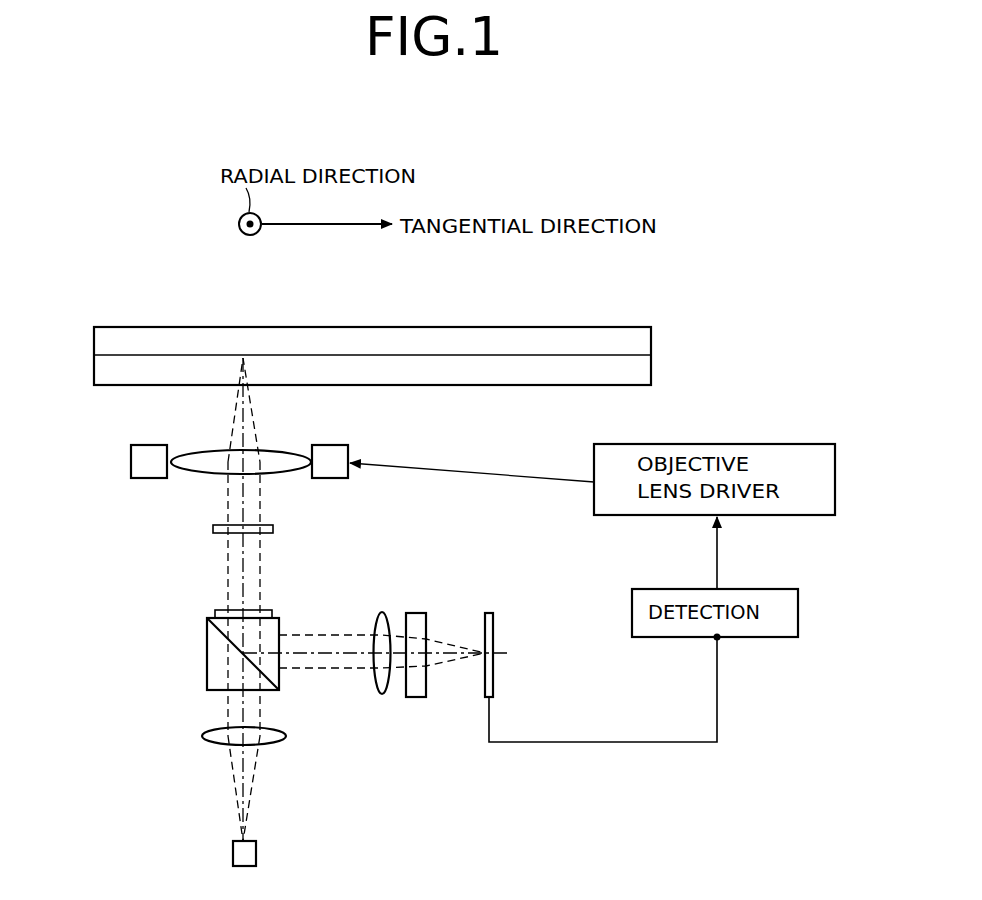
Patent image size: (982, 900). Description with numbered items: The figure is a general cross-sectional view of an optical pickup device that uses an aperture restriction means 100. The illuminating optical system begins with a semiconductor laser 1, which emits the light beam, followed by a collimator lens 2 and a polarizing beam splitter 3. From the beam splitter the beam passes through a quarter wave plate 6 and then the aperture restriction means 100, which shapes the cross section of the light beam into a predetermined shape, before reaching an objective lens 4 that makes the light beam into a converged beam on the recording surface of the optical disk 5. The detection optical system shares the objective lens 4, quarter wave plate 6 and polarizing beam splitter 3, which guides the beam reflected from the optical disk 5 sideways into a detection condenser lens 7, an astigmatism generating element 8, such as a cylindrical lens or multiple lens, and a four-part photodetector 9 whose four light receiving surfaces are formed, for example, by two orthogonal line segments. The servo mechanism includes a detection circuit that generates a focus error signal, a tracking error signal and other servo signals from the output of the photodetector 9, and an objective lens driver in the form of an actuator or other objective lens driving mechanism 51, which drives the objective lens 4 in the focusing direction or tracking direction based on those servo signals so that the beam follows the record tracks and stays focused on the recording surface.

The semiconductor laser 1 is at (256, 855).
The collimator lens 2 is at (286, 735).
The polarizing beam splitter 3 is at (207, 670).
The objective lens 4 is at (287, 449).
The optical disk 5 is at (601, 327).
The quarter wave plate 6 is at (215, 610).
The detection condenser lens 7 is at (382, 612).
The astigmatism generating element 8 is at (418, 613).
The four-part photodetector 9 is at (488, 613).
The objective lens driving mechanism 51 is at (131, 464).
The aperture restriction means 100 is at (273, 529).